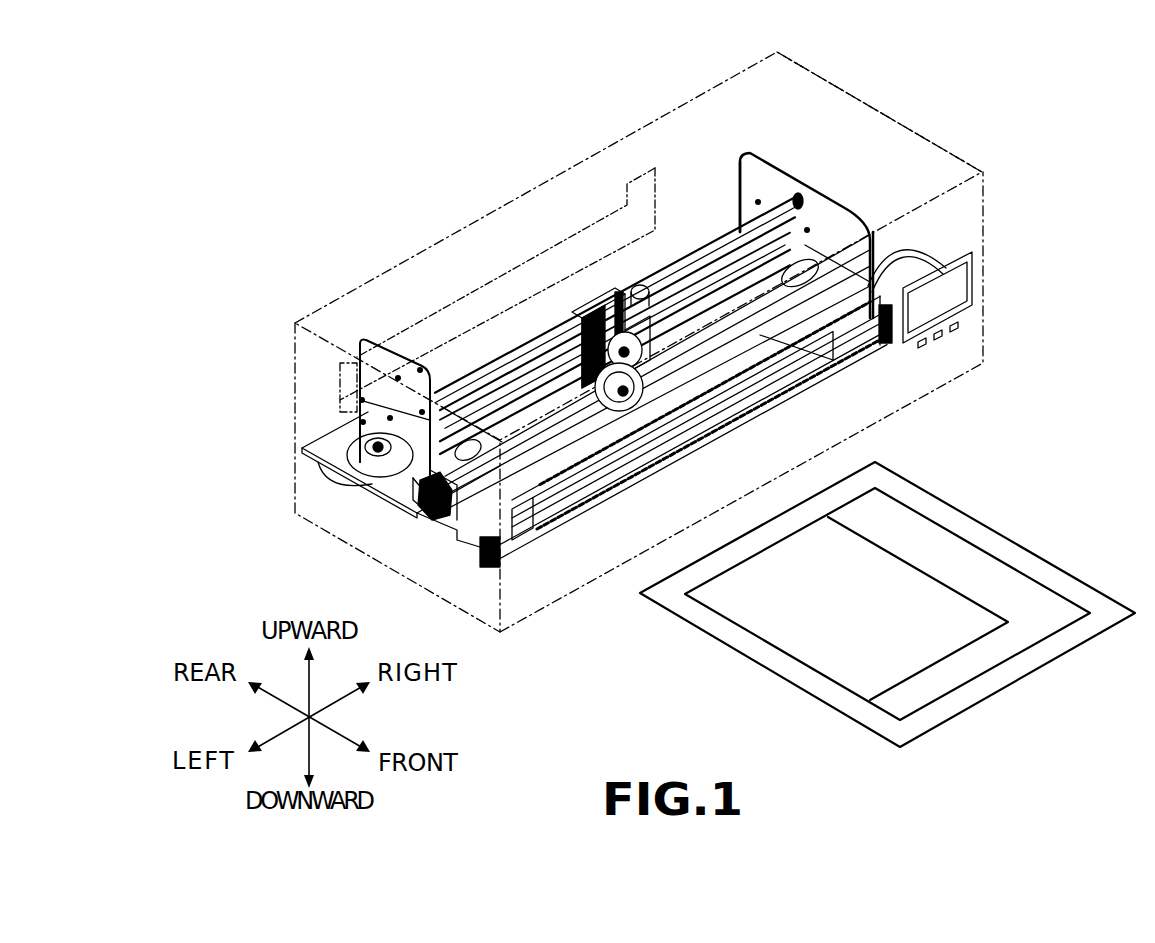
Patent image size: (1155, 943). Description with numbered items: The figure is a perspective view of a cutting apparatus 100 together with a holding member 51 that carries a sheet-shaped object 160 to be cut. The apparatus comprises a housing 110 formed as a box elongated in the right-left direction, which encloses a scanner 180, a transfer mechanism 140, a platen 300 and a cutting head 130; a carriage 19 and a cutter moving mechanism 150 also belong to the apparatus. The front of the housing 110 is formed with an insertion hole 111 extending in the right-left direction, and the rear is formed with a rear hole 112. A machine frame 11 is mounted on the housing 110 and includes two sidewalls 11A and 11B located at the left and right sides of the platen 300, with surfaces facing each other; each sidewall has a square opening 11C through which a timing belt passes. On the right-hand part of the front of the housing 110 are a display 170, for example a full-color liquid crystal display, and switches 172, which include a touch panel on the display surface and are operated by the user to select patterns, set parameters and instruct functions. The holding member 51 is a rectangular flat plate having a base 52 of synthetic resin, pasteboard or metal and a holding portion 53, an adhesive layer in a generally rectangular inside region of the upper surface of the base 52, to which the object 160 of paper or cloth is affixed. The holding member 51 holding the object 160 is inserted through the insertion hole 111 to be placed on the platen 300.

The cutting apparatus 100 is at (906, 80).
The housing 110 is at (922, 150).
The rear hole 112 is at (512, 277).
The machine frame 11 is at (502, 556).
The insertion hole 111 is at (533, 545).
The sidewall 11A is at (375, 356).
The sidewall 11B is at (843, 208).
The opening 11C is at (835, 214).
The carriage 19 is at (647, 284).
The cutting head 130 is at (601, 329).
The scanner 180 is at (718, 266).
The transfer mechanism 140 is at (898, 238).
The cutter moving mechanism 150 is at (326, 416).
The display 170 is at (950, 285).
The switches 172 is at (958, 327).
The platen 300 is at (752, 348).
The object 160 is at (803, 640).
The holding member 51 is at (913, 618).
The base 52 is at (1012, 663).
The holding portion 53 is at (953, 670).